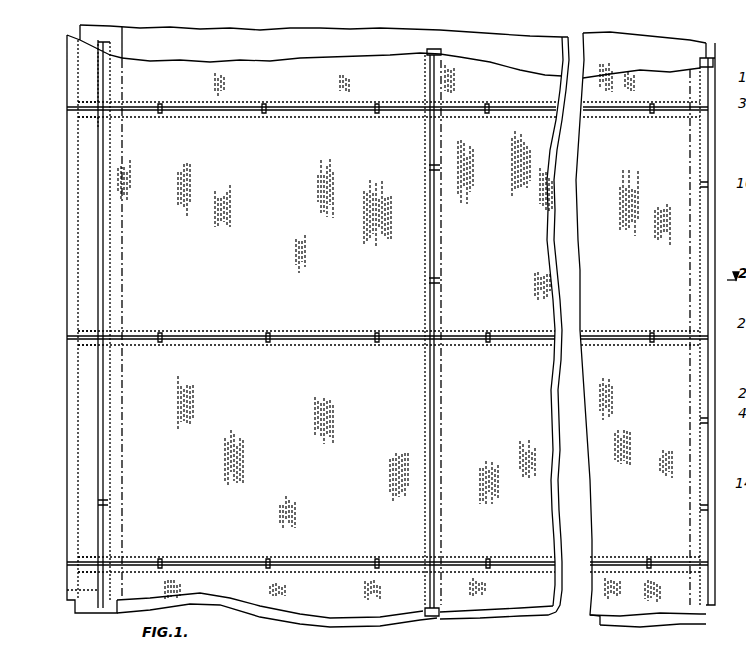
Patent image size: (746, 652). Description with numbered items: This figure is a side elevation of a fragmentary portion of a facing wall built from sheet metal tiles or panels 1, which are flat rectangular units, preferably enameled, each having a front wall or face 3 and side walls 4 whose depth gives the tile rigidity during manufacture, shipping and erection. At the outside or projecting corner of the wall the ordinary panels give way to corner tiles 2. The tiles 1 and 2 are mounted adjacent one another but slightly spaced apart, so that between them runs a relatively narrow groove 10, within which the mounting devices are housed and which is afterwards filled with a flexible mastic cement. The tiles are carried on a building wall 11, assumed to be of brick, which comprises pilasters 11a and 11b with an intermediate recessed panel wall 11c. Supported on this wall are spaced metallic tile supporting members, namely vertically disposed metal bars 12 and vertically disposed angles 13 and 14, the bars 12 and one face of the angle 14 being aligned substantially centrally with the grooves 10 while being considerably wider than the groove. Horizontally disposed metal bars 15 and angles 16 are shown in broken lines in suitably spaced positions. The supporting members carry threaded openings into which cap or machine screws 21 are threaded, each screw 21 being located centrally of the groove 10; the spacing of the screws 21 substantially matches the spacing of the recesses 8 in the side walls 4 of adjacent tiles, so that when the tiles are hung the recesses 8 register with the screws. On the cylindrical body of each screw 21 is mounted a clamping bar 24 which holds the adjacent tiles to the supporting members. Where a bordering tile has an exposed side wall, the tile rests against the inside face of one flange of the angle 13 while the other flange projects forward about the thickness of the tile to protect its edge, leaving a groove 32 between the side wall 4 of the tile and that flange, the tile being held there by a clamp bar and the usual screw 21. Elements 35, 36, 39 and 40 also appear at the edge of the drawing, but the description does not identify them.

The sheet metal tile 1 is at (290, 224).
The corner tile 2 is at (67, 198).
The front wall 3 is at (389, 322).
The side wall 4 is at (430, 88).
The recess 8 is at (458, 393).
The groove 10 is at (297, 105).
The building wall 11 is at (378, 28).
The pilaster 11a is at (112, 45).
The pilaster 11b is at (700, 52).
The recessed panel wall 11c is at (258, 28).
The metal bar 12 is at (110, 192).
The angle 13 is at (690, 183).
The angle 14 is at (445, 195).
The horizontal metal bar 15 is at (88, 100).
The horizontal angle 16 is at (200, 120).
The screw element 21 is at (160, 105).
The clamping bar 24 is at (160, 112).
The groove 32 is at (658, 373).
The edge member 35 is at (738, 53).
The edge member 36 is at (739, 305).
The edge member 39 is at (735, 632).
The edge member 40 is at (739, 358).